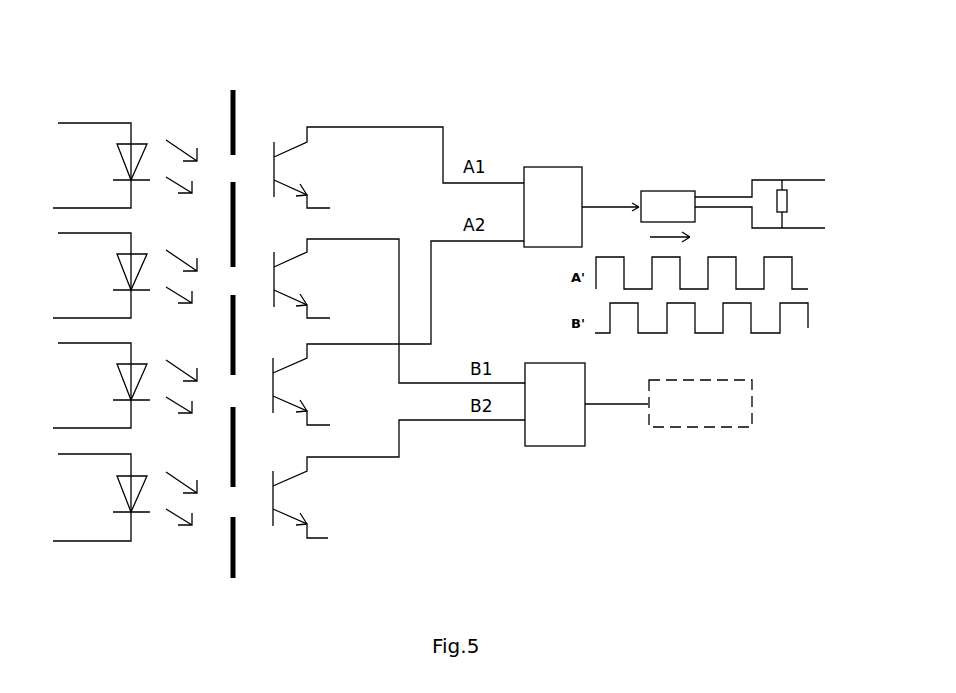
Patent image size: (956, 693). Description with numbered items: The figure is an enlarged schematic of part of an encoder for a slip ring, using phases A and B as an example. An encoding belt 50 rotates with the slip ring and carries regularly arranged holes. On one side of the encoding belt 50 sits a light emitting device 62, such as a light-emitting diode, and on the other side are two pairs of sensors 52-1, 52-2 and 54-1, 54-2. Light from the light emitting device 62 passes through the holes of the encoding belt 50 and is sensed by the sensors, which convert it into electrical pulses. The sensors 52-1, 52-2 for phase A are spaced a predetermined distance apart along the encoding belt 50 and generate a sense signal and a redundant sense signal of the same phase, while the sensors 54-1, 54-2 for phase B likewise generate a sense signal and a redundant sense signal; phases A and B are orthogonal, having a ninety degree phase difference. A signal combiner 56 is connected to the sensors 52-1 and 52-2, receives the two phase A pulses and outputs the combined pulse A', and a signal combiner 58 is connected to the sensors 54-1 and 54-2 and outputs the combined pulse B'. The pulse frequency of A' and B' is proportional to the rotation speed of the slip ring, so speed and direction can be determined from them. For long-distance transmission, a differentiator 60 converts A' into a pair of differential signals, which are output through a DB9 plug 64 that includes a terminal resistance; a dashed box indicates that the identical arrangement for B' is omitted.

The encoding belt 50 is at (237, 555).
The sensor 52-1 is at (399, 167).
The sensor 52-2 is at (398, 333).
The sensor 54-1 is at (399, 311).
The sensor 54-2 is at (399, 479).
The signal combiner 56 is at (563, 167).
The signal combiner 58 is at (573, 446).
The differentiator 60 is at (667, 191).
The light emitting device 62 is at (102, 123).
The DB9 plug 64 is at (776, 180).